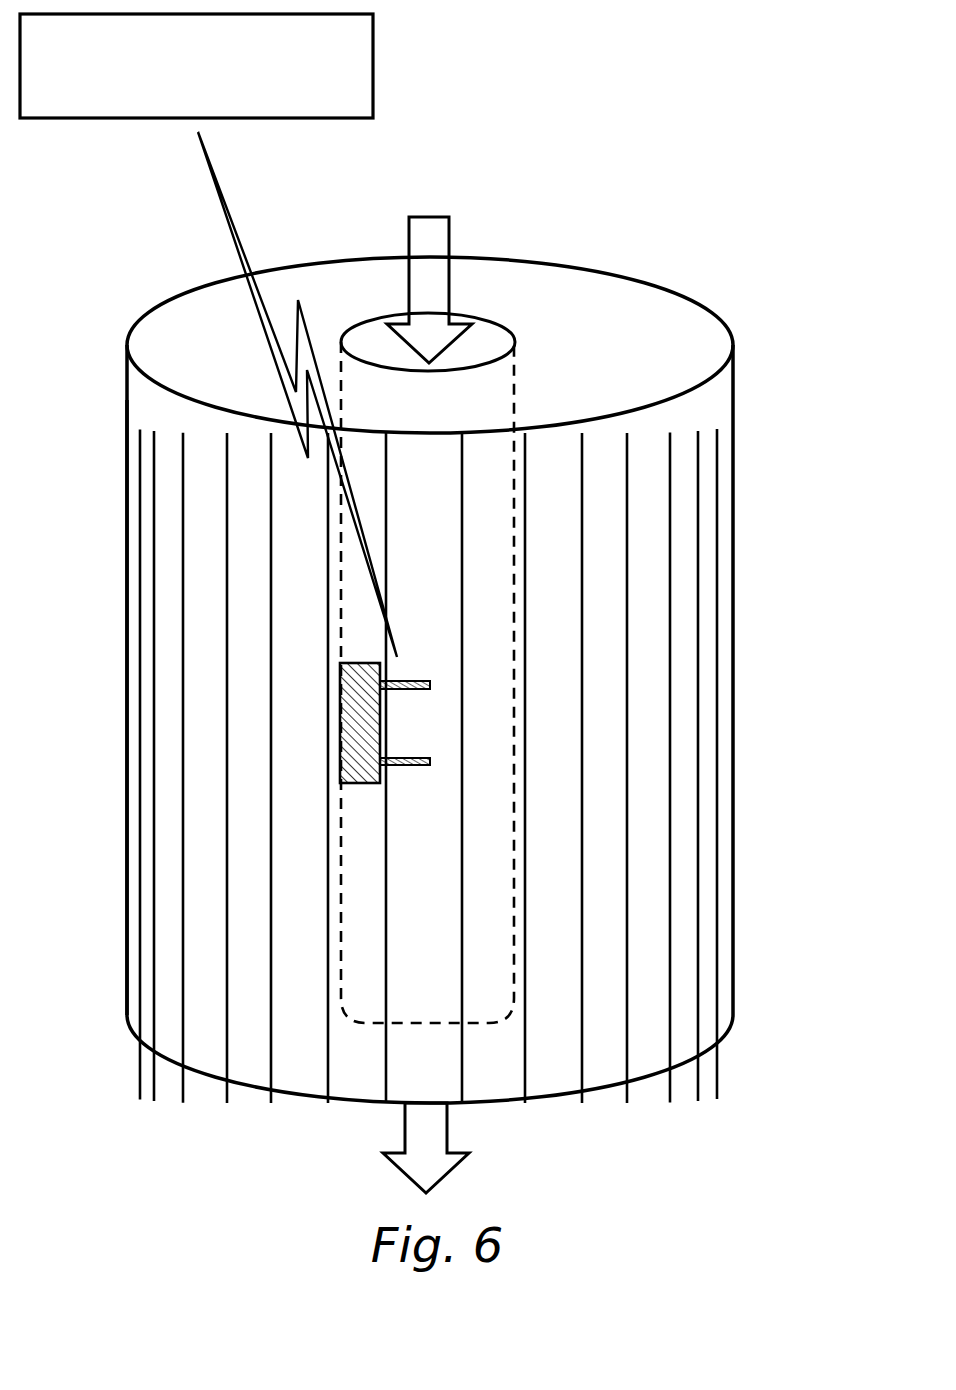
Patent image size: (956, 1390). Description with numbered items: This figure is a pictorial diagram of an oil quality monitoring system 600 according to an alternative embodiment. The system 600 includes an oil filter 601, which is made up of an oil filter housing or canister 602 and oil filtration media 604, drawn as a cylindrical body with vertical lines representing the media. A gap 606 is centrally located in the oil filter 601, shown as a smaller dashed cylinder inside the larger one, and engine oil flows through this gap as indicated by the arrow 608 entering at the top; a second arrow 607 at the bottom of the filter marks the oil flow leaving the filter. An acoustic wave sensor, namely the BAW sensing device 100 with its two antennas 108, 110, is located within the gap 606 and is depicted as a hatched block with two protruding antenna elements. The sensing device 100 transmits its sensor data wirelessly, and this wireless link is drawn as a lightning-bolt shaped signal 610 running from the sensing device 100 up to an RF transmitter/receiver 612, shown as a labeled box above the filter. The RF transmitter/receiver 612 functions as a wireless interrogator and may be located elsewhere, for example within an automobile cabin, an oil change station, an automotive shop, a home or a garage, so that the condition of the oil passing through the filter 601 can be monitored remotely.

The oil quality monitoring system 600 is at (712, 20).
The oil filter 601 is at (752, 412).
The oil filter housing or canister 602 is at (127, 972).
The oil filtration media 604 is at (267, 1062).
The gap 606 is at (491, 332).
The outlet flow arrow 607 is at (386, 1156).
The arrow 608 is at (409, 235).
The RF signal 610 is at (223, 203).
The RF transmitter/receiver 612 is at (179, 109).
The BAW sensing device 100 is at (363, 785).
The antenna 108 is at (415, 680).
The antenna 110 is at (407, 765).